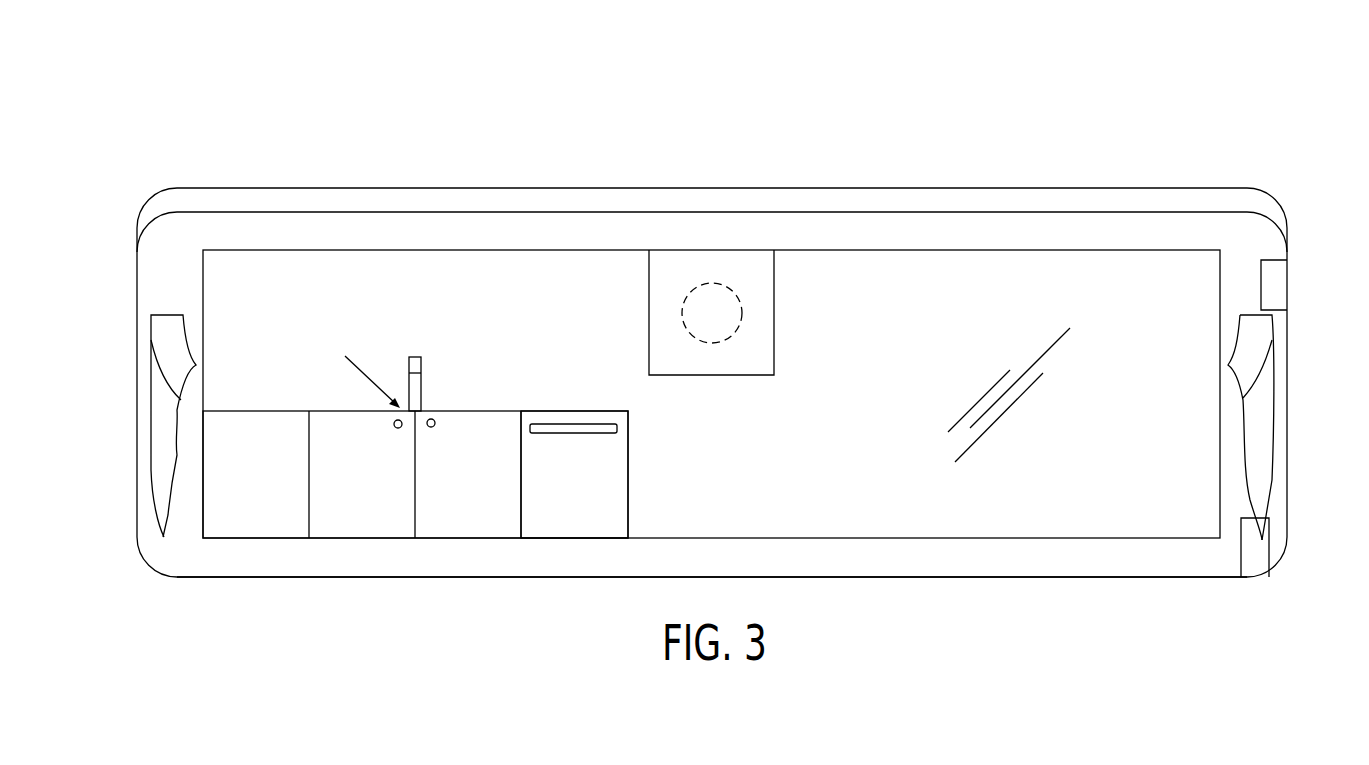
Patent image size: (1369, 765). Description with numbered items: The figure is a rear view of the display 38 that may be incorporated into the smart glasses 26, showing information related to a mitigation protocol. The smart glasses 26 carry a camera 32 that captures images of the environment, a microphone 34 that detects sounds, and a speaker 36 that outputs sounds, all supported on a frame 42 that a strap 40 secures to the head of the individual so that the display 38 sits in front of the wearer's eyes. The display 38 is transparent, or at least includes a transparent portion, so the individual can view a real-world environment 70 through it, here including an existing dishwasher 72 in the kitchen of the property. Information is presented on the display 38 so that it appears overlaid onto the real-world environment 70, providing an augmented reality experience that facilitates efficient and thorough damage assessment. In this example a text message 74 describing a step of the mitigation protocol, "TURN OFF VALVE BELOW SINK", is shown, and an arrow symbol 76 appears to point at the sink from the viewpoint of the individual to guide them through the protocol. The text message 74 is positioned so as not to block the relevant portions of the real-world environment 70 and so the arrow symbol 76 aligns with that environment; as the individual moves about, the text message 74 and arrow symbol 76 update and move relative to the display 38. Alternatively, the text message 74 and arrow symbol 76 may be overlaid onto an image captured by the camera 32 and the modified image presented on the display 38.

The smart glasses 26 is at (256, 110).
The camera 32 is at (741, 325).
The microphone 34 is at (1253, 553).
The speaker 36 is at (1275, 292).
The display 38 is at (203, 282).
The strap 40 is at (162, 403).
The frame 42 is at (580, 578).
The real-world environment 70 is at (664, 444).
The dishwasher 72 is at (608, 486).
The text message 74 is at (396, 290).
The arrow symbol 76 is at (350, 375).